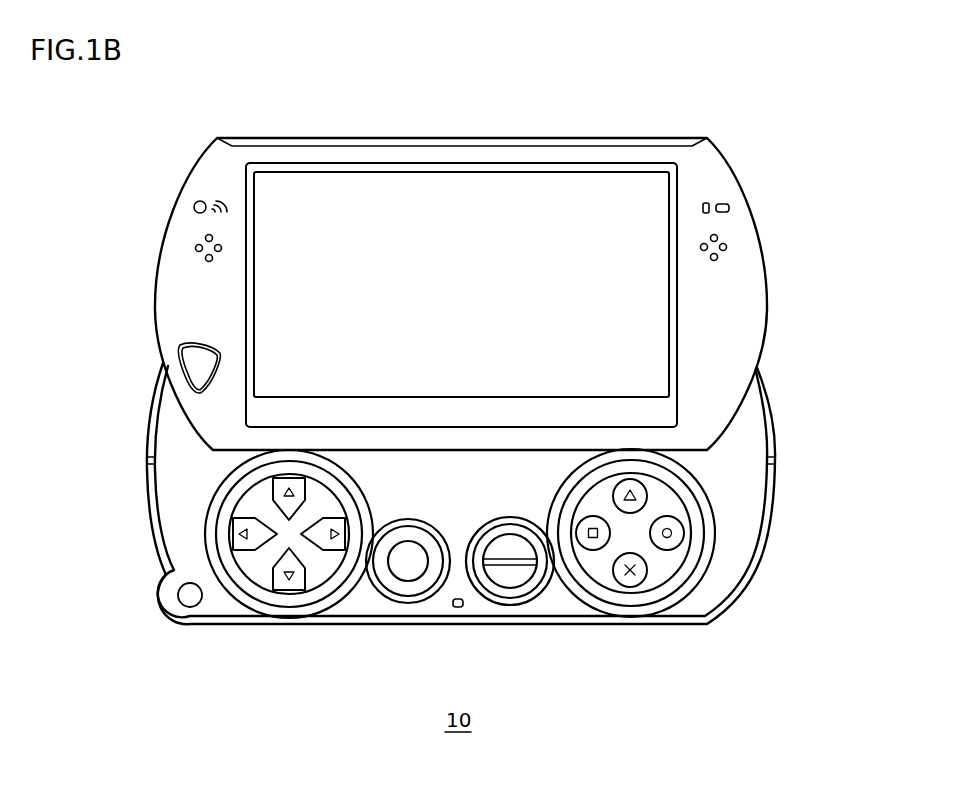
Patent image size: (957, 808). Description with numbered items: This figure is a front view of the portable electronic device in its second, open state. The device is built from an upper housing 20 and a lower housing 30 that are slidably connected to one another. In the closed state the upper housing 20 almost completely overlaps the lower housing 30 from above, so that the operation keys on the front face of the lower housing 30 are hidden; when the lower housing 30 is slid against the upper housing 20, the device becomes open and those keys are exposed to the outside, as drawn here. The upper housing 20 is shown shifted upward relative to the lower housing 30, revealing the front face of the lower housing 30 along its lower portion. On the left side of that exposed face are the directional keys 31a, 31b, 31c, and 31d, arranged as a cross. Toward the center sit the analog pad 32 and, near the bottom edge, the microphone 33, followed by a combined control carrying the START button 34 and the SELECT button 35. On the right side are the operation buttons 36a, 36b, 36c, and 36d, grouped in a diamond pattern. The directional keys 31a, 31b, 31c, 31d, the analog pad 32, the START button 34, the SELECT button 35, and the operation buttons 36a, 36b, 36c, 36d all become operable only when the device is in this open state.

The upper housing 20 is at (705, 163).
The lower housing 30 is at (742, 440).
The directional key 31a is at (282, 493).
The directional key 31b is at (250, 531).
The directional key 31c is at (282, 567).
The directional key 31d is at (328, 542).
The analog pad 32 is at (408, 573).
The microphone 33 is at (458, 609).
The START button 34 is at (508, 582).
The SELECT button 35 is at (528, 553).
The operation button 36a is at (643, 495).
The operation button 36b is at (672, 531).
The operation button 36c is at (593, 543).
The operation button 36d is at (640, 568).